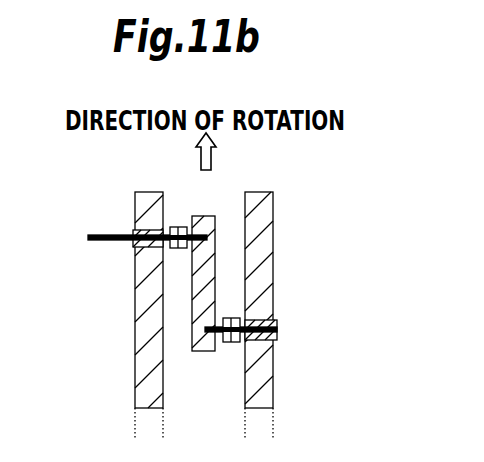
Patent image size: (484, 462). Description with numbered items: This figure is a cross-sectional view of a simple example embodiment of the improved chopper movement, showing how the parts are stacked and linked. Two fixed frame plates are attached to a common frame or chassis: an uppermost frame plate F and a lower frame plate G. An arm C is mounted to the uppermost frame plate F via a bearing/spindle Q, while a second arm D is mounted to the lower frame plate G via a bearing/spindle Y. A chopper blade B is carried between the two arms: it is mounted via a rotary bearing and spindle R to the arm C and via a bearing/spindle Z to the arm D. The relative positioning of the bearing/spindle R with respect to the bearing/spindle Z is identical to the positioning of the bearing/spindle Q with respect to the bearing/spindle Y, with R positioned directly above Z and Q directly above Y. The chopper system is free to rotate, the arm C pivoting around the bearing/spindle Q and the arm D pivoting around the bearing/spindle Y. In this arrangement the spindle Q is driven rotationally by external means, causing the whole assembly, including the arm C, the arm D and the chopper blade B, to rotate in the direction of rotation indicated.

The frame plate F is at (150, 353).
The chopper blade B is at (203, 352).
The frame plate G is at (262, 393).
The bearing/spindle Q is at (135, 230).
The bearing/spindle R is at (190, 230).
The arm C is at (178, 250).
The arm D is at (233, 318).
The bearing/spindle Z is at (218, 337).
The bearing/spindle Y is at (275, 340).